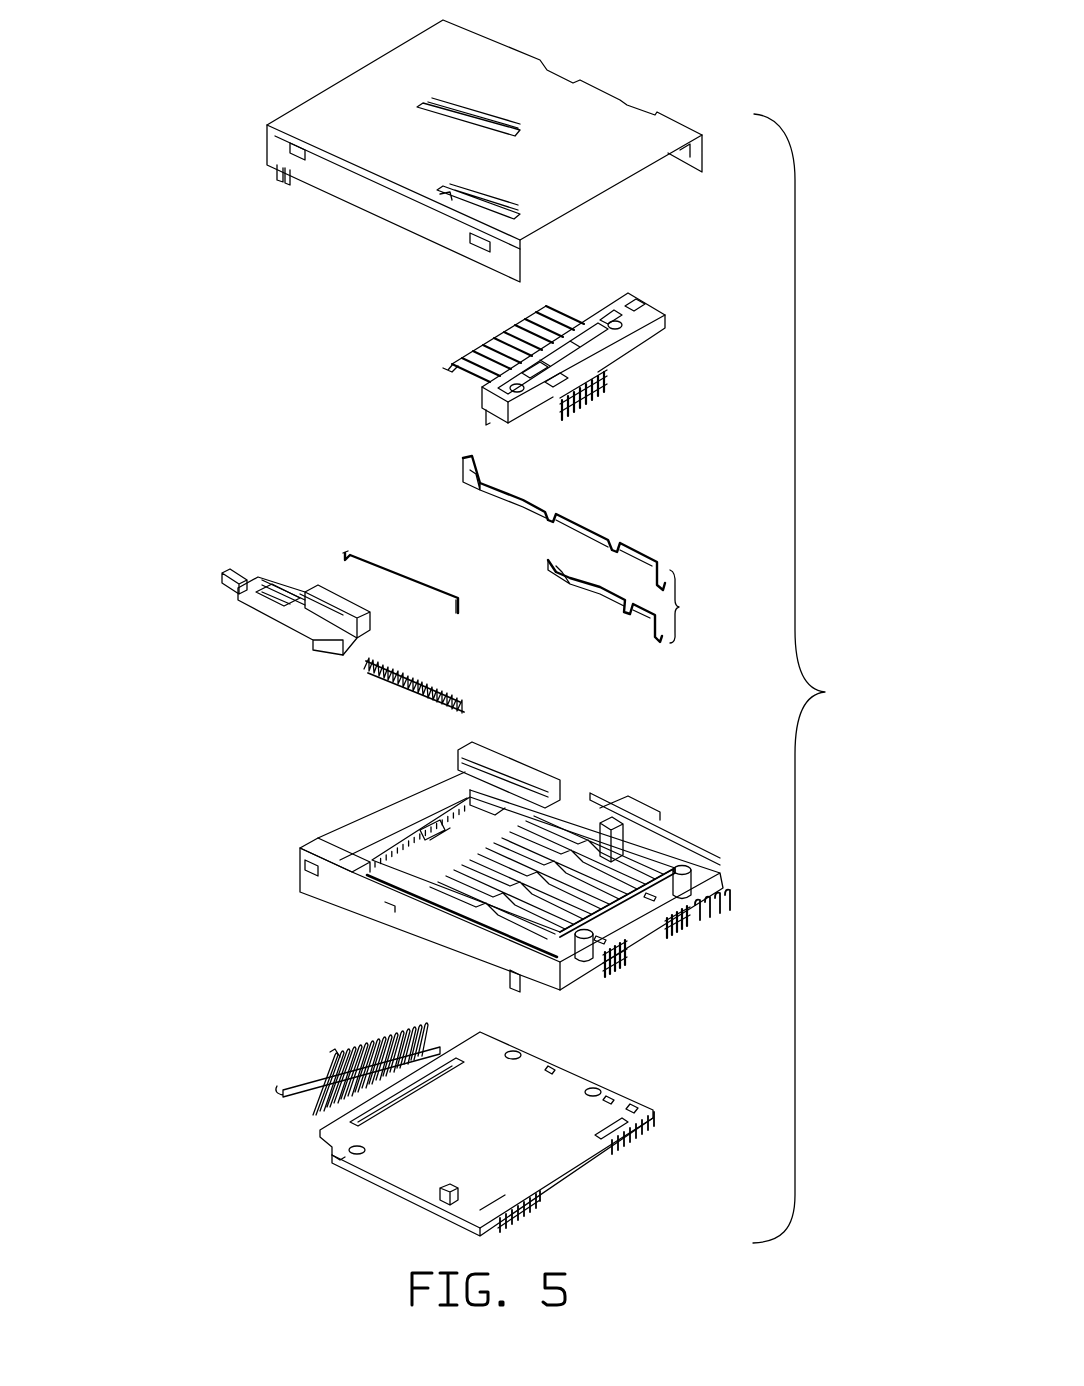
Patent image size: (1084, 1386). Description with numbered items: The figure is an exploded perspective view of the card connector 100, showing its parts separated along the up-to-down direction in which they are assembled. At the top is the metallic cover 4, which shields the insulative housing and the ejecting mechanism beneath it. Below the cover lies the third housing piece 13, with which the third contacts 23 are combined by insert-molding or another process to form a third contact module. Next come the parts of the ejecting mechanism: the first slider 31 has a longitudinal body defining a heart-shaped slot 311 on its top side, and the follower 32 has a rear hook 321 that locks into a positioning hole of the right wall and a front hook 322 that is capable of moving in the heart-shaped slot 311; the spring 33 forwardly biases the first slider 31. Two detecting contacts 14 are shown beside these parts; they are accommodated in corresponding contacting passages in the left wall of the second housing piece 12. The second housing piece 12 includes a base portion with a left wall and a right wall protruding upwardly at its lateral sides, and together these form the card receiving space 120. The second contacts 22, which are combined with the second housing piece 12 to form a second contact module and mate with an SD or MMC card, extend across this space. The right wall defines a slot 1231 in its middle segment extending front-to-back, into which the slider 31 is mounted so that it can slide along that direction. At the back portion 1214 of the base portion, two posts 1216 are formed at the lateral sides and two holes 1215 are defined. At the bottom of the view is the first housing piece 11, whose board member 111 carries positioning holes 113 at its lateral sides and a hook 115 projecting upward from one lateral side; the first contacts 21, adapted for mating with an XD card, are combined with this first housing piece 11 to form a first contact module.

The card connector 100 is at (818, 678).
The metallic cover 4 is at (322, 70).
The third housing piece 13 is at (560, 359).
The third contacts 23 is at (498, 342).
The first slider 31 is at (263, 590).
The heart-shaped slot 311 is at (292, 612).
The follower 32 is at (384, 551).
The rear hook 321 is at (462, 603).
The front hook 322 is at (340, 557).
The spring 33 is at (383, 677).
The detecting contacts 14 is at (589, 549).
The second housing piece 12 is at (531, 860).
The card receiving space 120 is at (438, 875).
The second contacts 22 is at (592, 843).
The slot 1231 is at (557, 807).
The posts 1216 is at (685, 868).
The back portion 1214 is at (637, 925).
The holes 1215 is at (628, 950).
The first contacts 21 is at (428, 1033).
The first housing piece 11 is at (482, 1136).
The positioning holes 113 is at (597, 1092).
The board member 111 is at (398, 1183).
The hook 115 is at (447, 1197).